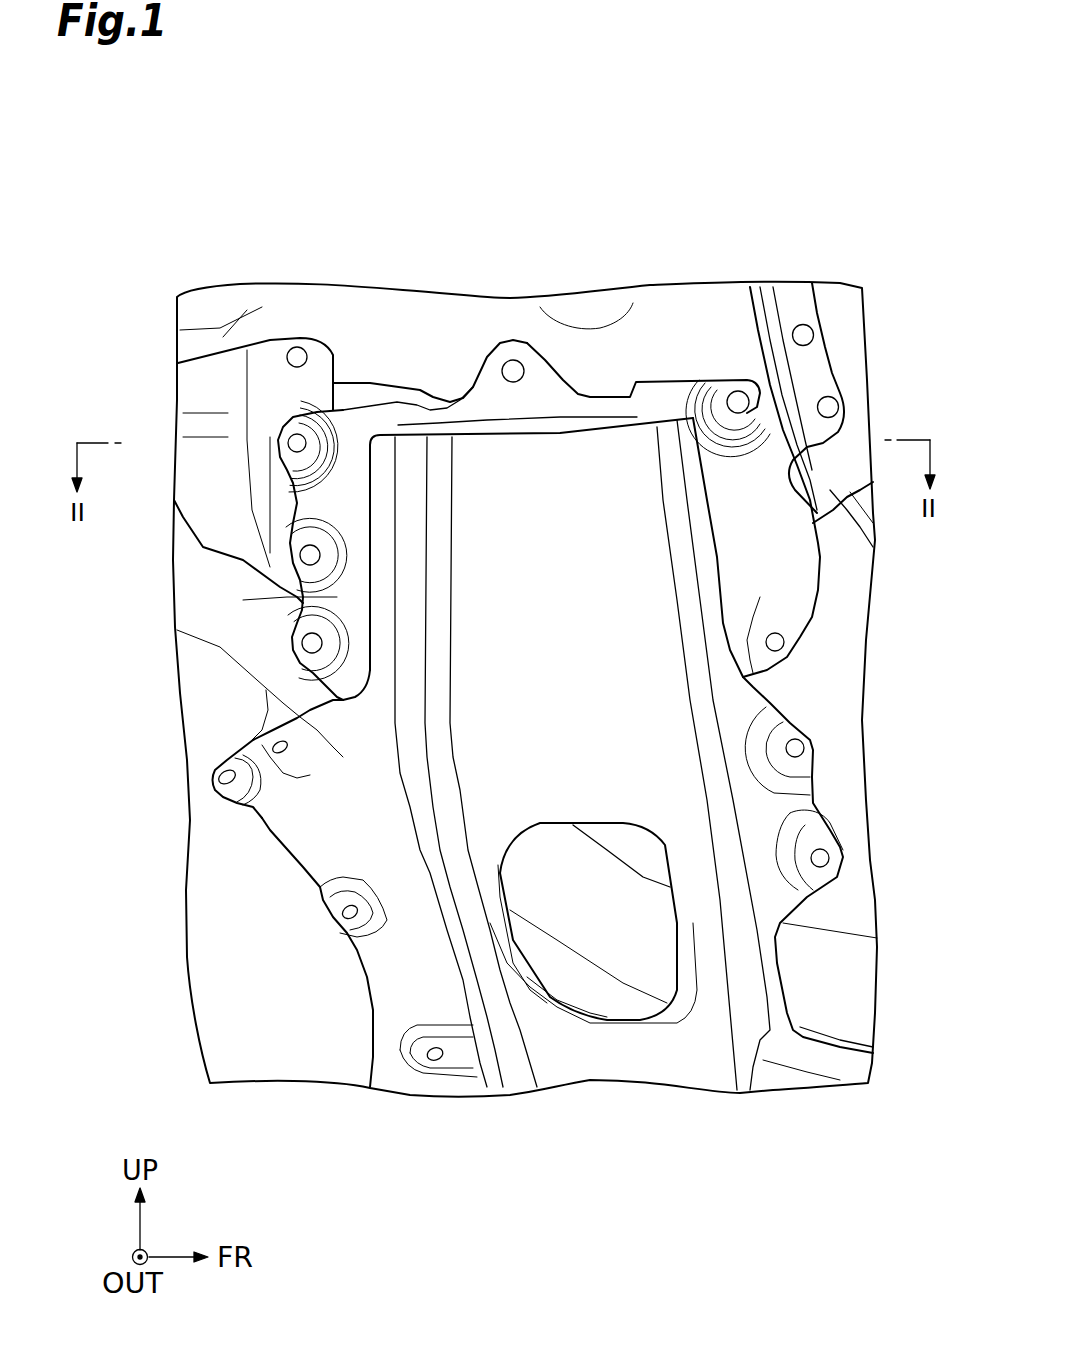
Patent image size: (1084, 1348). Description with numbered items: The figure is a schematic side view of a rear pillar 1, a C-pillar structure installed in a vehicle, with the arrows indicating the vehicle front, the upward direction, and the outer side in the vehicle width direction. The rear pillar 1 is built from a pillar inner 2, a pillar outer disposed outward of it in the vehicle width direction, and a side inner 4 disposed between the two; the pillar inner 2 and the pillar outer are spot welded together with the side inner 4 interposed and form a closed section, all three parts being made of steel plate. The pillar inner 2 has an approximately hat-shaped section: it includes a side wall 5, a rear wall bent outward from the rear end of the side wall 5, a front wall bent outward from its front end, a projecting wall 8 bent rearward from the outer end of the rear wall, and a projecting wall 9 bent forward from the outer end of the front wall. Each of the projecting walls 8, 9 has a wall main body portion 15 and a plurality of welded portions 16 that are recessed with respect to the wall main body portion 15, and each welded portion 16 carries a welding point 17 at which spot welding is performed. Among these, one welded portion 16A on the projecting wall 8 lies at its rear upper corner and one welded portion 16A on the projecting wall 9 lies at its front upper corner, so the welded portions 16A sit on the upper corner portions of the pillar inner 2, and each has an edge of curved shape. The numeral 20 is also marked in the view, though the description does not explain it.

The rear pillar 1 is at (193, 182).
The pillar inner 2 is at (806, 722).
The side inner 4 is at (687, 307).
The side wall 5 is at (612, 1057).
The projecting wall 8 is at (243, 600).
The projecting wall 9 is at (763, 561).
The wall main body portion 15 is at (362, 427).
The welded portion 16 is at (310, 663).
The welded portion 16A is at (297, 434).
The welding point 17 is at (288, 440).
The bead 20 is at (340, 468).